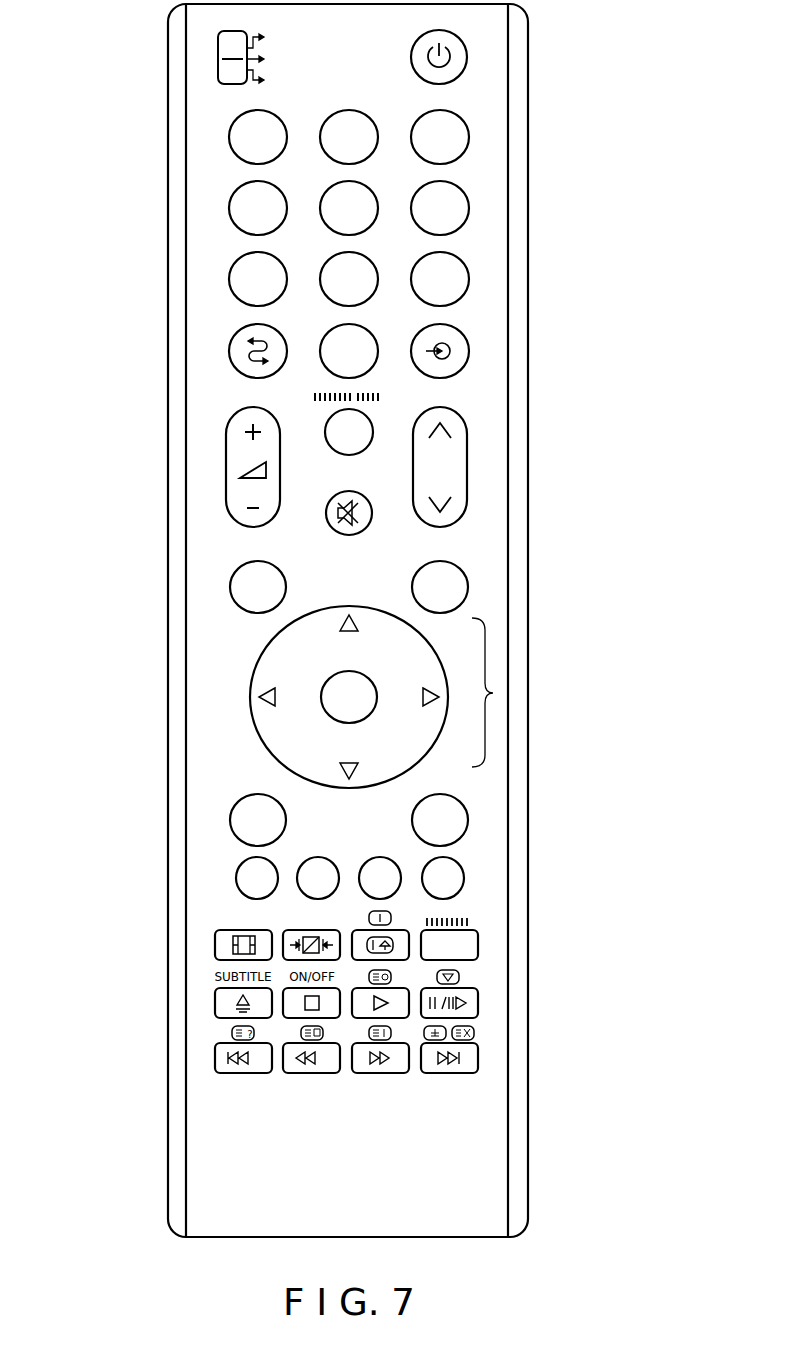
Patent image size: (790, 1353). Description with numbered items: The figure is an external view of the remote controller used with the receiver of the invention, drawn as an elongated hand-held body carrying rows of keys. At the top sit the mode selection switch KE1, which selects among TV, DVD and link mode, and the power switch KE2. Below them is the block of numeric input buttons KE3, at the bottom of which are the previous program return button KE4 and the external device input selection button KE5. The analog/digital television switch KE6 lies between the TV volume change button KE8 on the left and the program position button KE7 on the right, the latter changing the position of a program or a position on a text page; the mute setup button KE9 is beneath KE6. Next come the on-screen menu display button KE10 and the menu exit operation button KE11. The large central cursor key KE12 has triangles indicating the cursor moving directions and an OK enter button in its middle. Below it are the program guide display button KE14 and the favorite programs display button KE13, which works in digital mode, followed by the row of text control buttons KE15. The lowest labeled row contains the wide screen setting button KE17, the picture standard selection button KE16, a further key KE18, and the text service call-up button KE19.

The mode selection switch KE1 is at (218, 60).
The power switch KE2 is at (467, 53).
The numeric input buttons KE3 is at (229, 207).
The previous program return button KE4 is at (229, 351).
The external device input selection button KE5 is at (469, 344).
The analog/digital television switch KE6 is at (370, 418).
The program position button KE7 is at (467, 460).
The TV volume change button KE8 is at (226, 470).
The mute setup button KE9 is at (327, 521).
The on-screen menu display button KE10 is at (230, 590).
The menu exit operation button KE11 is at (468, 583).
The cursor key with enter button KE12 is at (493, 693).
The favorite programs display button KE13 is at (468, 819).
The program guide display button KE14 is at (230, 822).
The text control button KE15 is at (236, 880).
The picture standard selection button KE16 is at (290, 927).
The wide screen setting button KE17 is at (215, 948).
The image adjustment key KE18 is at (400, 930).
The text service call-up button KE19 is at (478, 945).